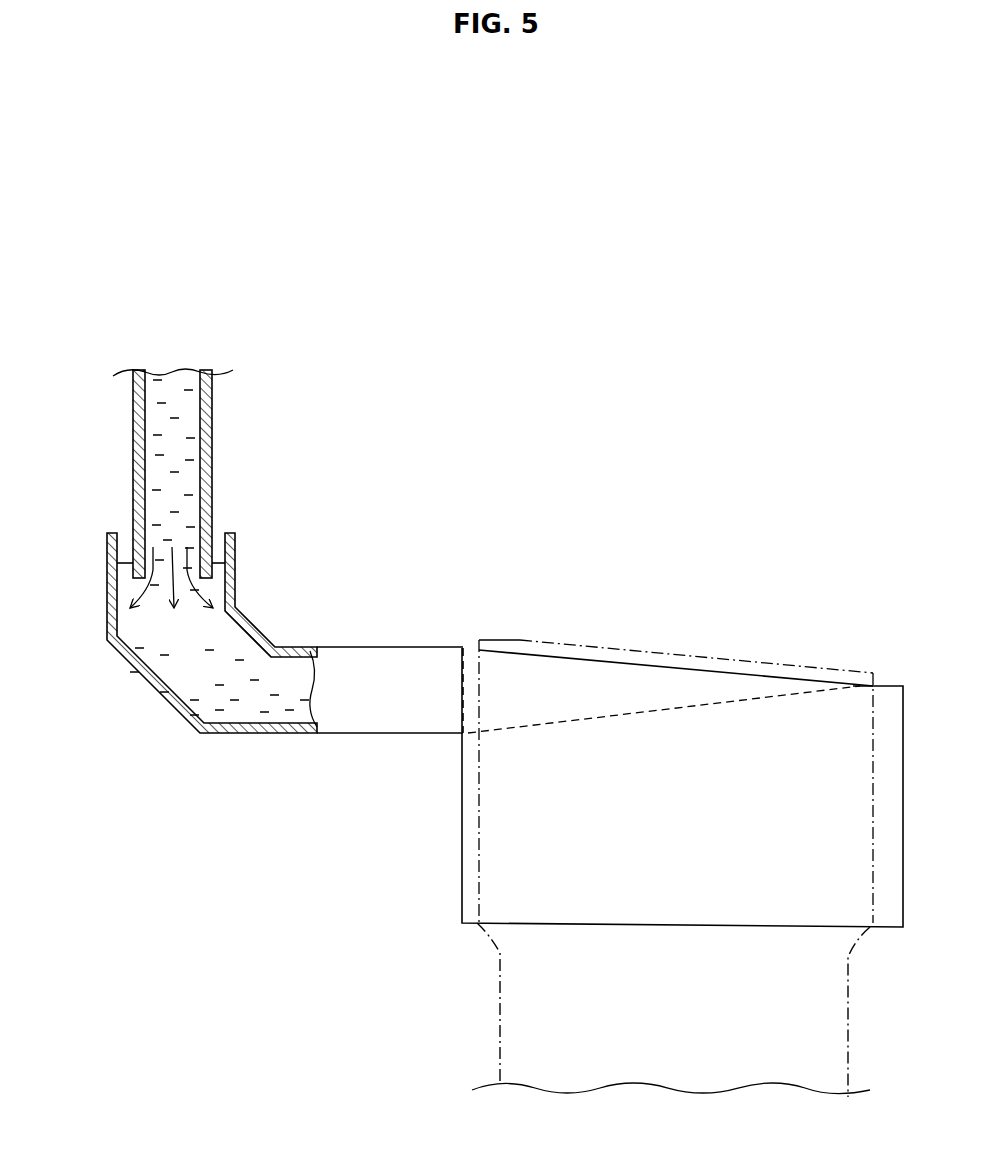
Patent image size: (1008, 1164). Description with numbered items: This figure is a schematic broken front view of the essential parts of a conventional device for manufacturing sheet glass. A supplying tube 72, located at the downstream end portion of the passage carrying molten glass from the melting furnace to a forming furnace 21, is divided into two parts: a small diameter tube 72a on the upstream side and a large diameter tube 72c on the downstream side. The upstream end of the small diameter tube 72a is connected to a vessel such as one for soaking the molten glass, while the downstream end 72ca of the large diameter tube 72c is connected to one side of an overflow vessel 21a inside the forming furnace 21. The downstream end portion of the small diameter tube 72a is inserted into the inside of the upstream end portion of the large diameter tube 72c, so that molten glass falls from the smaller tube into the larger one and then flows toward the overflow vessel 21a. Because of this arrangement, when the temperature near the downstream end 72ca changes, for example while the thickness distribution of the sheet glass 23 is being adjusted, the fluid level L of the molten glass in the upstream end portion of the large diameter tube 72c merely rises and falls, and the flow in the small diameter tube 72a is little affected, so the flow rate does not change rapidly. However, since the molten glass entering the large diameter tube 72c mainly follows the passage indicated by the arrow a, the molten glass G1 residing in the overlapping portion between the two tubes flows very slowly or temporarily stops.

The supplying tube 72 is at (237, 491).
The small diameter tube 72a is at (133, 427).
The large diameter tube 72c is at (108, 625).
The downstream end 72ca is at (462, 680).
The molten glass G1 is at (121, 553).
The fluid level L is at (221, 553).
The arrow a is at (172, 592).
The forming furnace 21 is at (804, 659).
The overflow vessel 21a is at (593, 680).
The sheet glass 23 is at (500, 995).